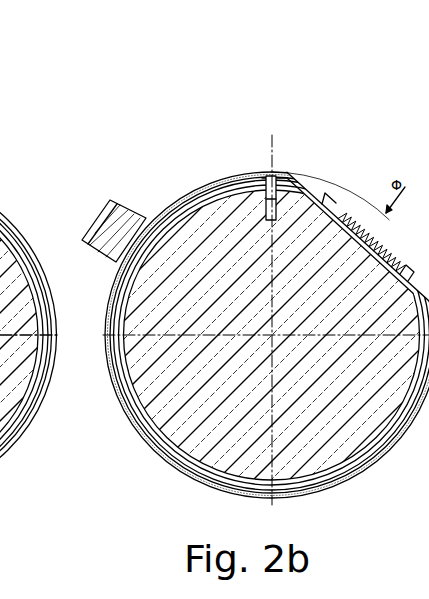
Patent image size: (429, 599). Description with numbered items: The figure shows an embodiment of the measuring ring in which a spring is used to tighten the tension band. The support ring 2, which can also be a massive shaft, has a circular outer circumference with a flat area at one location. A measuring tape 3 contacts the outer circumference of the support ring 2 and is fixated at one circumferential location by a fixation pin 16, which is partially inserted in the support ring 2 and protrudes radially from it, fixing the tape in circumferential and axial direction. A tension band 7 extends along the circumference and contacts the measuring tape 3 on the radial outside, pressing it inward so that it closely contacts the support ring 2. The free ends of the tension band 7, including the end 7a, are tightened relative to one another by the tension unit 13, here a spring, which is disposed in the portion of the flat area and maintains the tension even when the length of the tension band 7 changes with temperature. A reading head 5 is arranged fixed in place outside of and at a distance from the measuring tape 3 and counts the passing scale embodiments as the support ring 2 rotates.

The support ring 2 is at (118, 200).
The measuring tape 3 is at (171, 205).
The reading head 5 is at (82, 227).
The tension band 7 is at (206, 178).
The end of the tension band 7a is at (331, 185).
The tension unit 13 is at (353, 217).
The fixation pin 16 is at (268, 172).